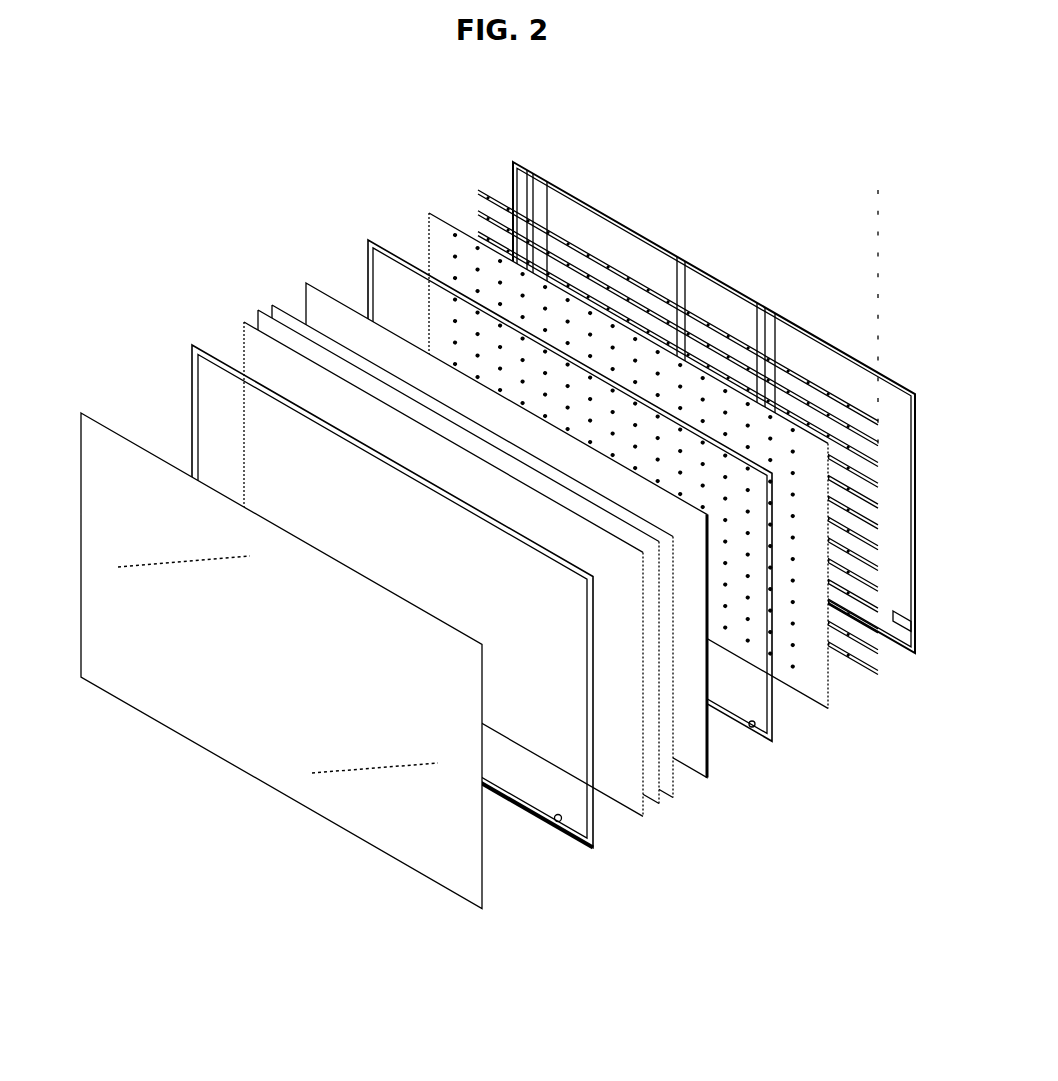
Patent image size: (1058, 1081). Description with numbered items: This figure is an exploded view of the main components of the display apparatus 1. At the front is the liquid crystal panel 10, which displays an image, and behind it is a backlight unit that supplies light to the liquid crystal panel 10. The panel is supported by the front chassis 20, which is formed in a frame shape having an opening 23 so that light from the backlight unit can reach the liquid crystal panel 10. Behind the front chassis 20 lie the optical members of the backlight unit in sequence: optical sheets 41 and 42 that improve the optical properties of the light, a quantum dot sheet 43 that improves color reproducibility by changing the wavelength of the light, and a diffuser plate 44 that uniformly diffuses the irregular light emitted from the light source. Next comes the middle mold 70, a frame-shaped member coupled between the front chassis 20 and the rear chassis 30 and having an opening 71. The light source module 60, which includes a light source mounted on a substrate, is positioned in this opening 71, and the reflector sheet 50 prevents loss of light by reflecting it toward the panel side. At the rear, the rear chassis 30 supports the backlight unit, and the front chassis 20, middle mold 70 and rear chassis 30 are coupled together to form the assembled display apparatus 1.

The display apparatus 1 is at (318, 131).
The liquid crystal panel 10 is at (362, 820).
The front chassis 20 is at (192, 345).
The opening 23 is at (558, 822).
The rear chassis 30 is at (528, 162).
The optical sheet 41 is at (244, 322).
The optical sheet 42 is at (258, 310).
The quantum dot sheet 43 is at (272, 305).
The diffuser plate 44 is at (306, 283).
The reflector sheet 50 is at (429, 212).
The light source module 60 is at (478, 190).
The middle mold 70 is at (368, 240).
The opening 71 is at (752, 727).